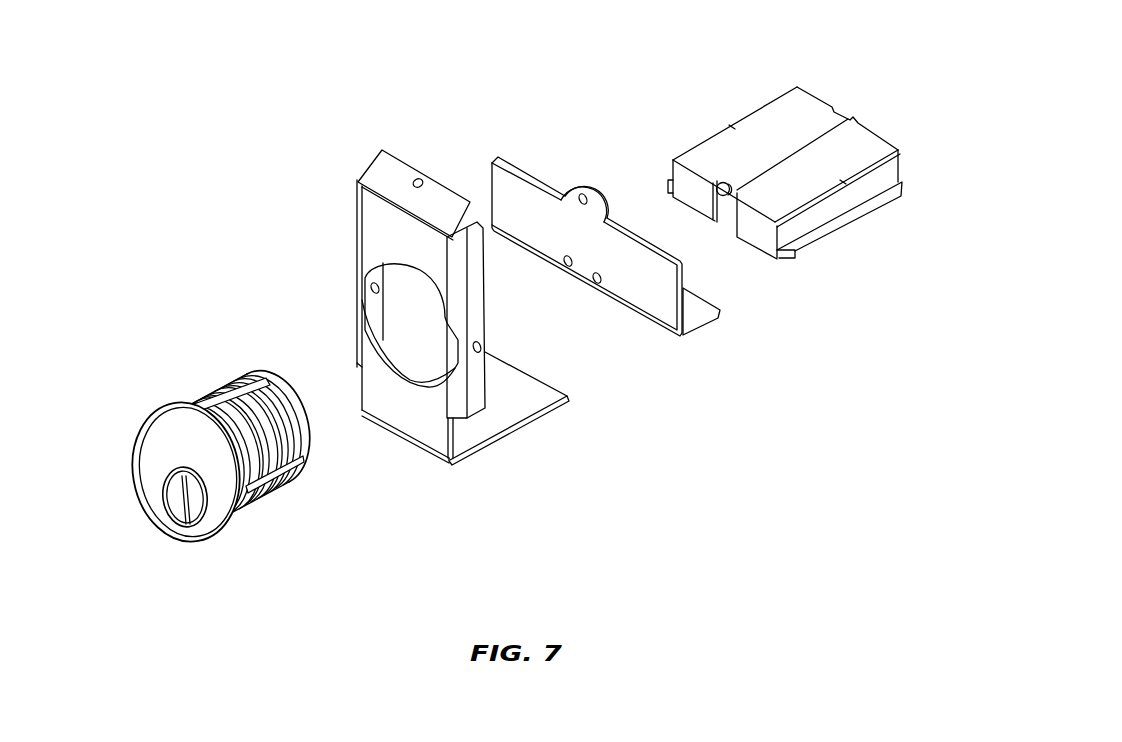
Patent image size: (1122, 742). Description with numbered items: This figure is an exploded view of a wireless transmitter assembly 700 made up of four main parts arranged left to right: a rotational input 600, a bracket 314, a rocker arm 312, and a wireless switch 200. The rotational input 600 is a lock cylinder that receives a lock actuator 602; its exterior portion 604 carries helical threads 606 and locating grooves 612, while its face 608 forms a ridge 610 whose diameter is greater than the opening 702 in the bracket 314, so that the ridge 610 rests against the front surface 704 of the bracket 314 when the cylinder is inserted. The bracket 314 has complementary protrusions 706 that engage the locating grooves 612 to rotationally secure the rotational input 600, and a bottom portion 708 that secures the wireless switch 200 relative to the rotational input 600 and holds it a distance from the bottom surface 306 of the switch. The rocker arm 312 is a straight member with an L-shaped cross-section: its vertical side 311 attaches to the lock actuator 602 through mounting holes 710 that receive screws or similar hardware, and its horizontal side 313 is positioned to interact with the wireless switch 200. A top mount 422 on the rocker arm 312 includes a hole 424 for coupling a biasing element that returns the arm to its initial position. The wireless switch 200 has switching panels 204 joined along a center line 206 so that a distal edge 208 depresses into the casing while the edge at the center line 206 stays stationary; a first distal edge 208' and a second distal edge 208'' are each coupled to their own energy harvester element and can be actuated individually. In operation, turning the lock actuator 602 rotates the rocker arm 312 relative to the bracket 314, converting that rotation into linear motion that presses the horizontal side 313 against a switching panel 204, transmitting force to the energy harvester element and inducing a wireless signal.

The wireless switch 200 is at (805, 205).
The switching panels 204 is at (867, 147).
The center line 206 is at (793, 150).
The distal edge 208 is at (726, 234).
The first distal edge 208' is at (885, 242).
The second distal edge 208'' is at (686, 99).
The bottom surface 306 is at (899, 200).
The vertical side 311 is at (503, 195).
The rocker arm 312 is at (600, 284).
The horizontal side 313 is at (700, 313).
The bracket 314 is at (381, 342).
The top mount 422 is at (575, 198).
The hole 424 is at (588, 188).
The rotational input 600 is at (196, 451).
The lock actuator 602 is at (173, 497).
The exterior portion 604 is at (280, 500).
The helical threads 606 is at (202, 387).
The face 608 is at (155, 432).
The ridge 610 is at (235, 530).
The locating grooves 612 is at (245, 390).
The wireless transmitter assembly 700 is at (517, 331).
The opening 702 is at (403, 307).
The front surface 704 is at (435, 435).
The complementary protrusions 706 is at (432, 372).
The bottom portion 708 is at (490, 425).
The mounting holes 710 is at (597, 285).